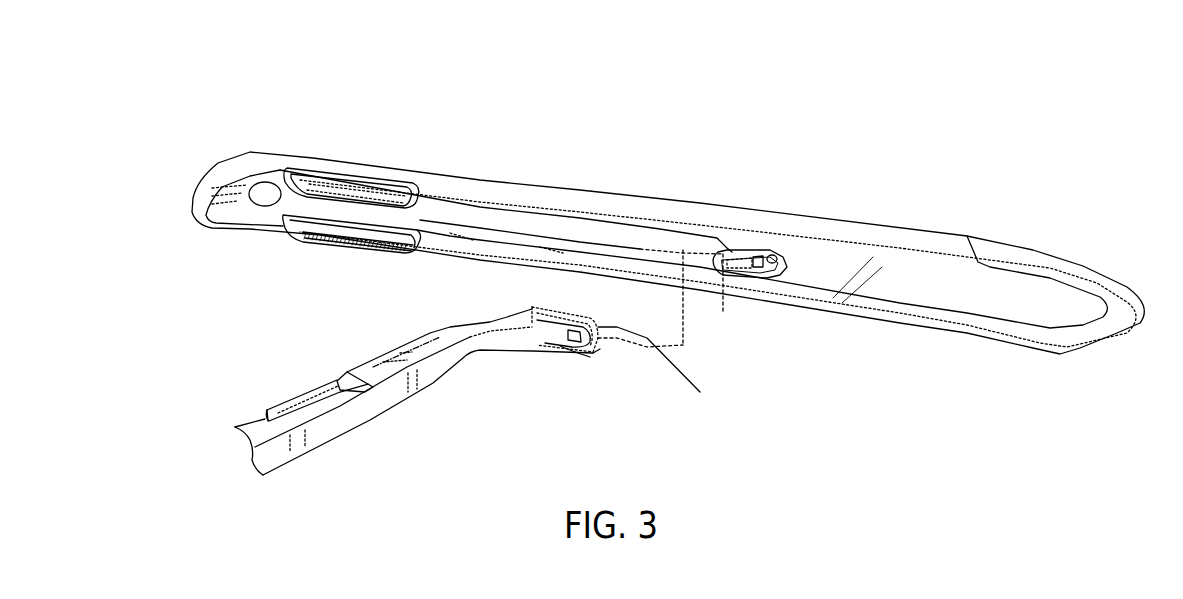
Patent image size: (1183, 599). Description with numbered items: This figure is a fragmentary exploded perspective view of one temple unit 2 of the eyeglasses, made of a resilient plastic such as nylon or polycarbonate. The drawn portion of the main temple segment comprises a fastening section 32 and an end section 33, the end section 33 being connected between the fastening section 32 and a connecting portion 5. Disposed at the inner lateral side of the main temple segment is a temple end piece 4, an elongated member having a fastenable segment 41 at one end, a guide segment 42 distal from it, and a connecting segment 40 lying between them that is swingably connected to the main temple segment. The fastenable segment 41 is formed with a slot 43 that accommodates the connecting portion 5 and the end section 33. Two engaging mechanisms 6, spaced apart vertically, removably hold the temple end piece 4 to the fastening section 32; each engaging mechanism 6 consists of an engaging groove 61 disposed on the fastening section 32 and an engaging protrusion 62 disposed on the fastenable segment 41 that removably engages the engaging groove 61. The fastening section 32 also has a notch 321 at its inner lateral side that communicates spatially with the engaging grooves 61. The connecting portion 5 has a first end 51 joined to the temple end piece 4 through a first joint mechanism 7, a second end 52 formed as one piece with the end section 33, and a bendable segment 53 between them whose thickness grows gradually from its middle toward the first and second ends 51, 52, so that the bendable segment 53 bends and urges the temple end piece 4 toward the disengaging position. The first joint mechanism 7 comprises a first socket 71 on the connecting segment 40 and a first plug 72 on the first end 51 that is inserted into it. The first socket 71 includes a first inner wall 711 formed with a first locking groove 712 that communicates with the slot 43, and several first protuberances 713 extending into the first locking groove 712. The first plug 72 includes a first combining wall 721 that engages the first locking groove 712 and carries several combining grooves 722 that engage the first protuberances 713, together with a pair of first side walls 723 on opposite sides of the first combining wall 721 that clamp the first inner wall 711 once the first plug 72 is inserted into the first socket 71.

The temple unit 2 is at (856, 97).
The temple end piece 4 is at (656, 197).
The connecting segment 40 is at (732, 222).
The fastenable segment 41 is at (241, 160).
The guide segment 42 is at (1082, 272).
The slot 43 is at (492, 227).
The engaging mechanism 6 is at (233, 268).
The engaging groove 61 is at (320, 403).
The engaging protrusion 62 is at (277, 200).
The fastening section 32 is at (337, 412).
The notch 321 is at (265, 417).
The end section 33 is at (413, 382).
The connecting portion 5 is at (575, 405).
The first end 51 is at (533, 333).
The second end 52 is at (459, 328).
The bendable segment 53 is at (498, 330).
The first joint mechanism 7 is at (748, 434).
The first socket 71 is at (713, 371).
The first inner wall 711 is at (785, 273).
The first locking groove 712 is at (715, 268).
The first protuberances 713 is at (774, 256).
The first plug 72 is at (590, 425).
The first combining wall 721 is at (575, 358).
The combining grooves 722 is at (590, 356).
The first side walls 723 is at (600, 349).